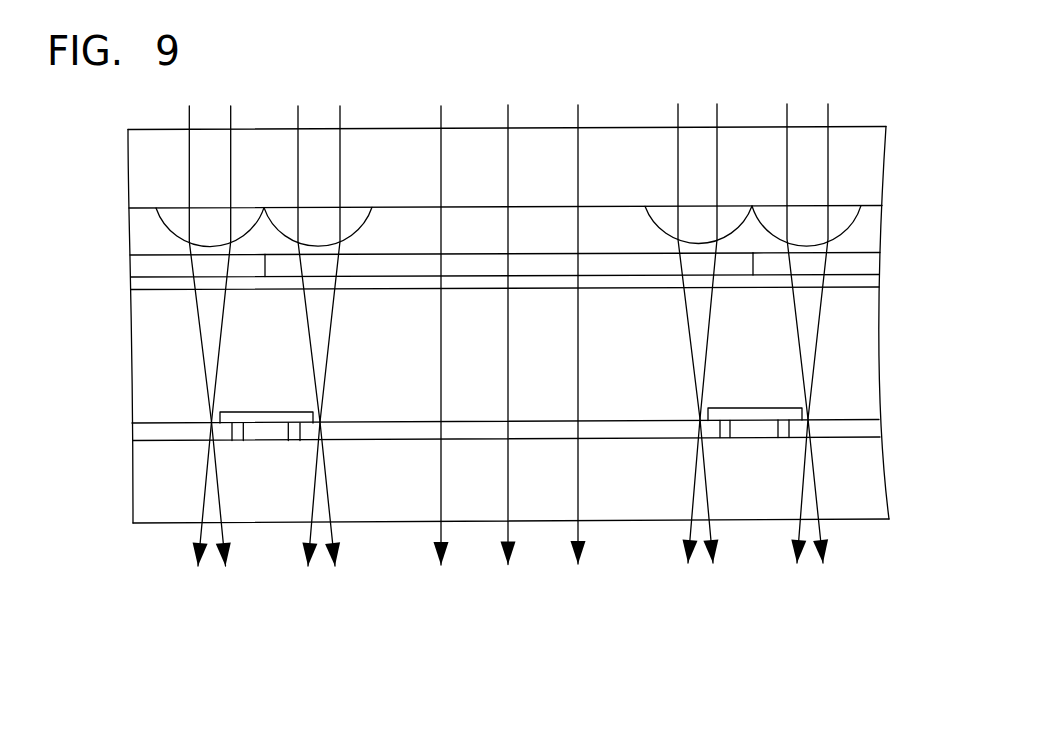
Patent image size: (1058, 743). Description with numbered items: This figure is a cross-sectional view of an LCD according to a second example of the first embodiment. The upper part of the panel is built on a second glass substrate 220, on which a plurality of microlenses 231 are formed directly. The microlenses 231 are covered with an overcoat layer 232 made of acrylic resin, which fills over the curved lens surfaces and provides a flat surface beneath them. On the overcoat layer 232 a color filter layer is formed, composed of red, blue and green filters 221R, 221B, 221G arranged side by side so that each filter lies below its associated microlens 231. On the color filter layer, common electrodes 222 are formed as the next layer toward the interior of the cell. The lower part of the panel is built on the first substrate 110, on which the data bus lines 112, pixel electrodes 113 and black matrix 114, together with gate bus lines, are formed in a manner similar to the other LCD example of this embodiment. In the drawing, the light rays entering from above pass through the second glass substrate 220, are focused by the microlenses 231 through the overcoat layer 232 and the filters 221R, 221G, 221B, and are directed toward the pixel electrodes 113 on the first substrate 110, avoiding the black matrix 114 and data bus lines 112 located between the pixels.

The first substrate 110 is at (192, 507).
The data bus lines 112 is at (753, 430).
The pixel electrodes 113 is at (182, 433).
The black matrix 114 is at (255, 420).
The second glass substrate 220 is at (170, 148).
The red filter 221R is at (147, 268).
The green filter 221G is at (401, 265).
The blue filter 221B is at (858, 268).
The common electrodes 222 is at (840, 283).
The microlenses 231 is at (668, 218).
The overcoat layer 232 is at (147, 238).